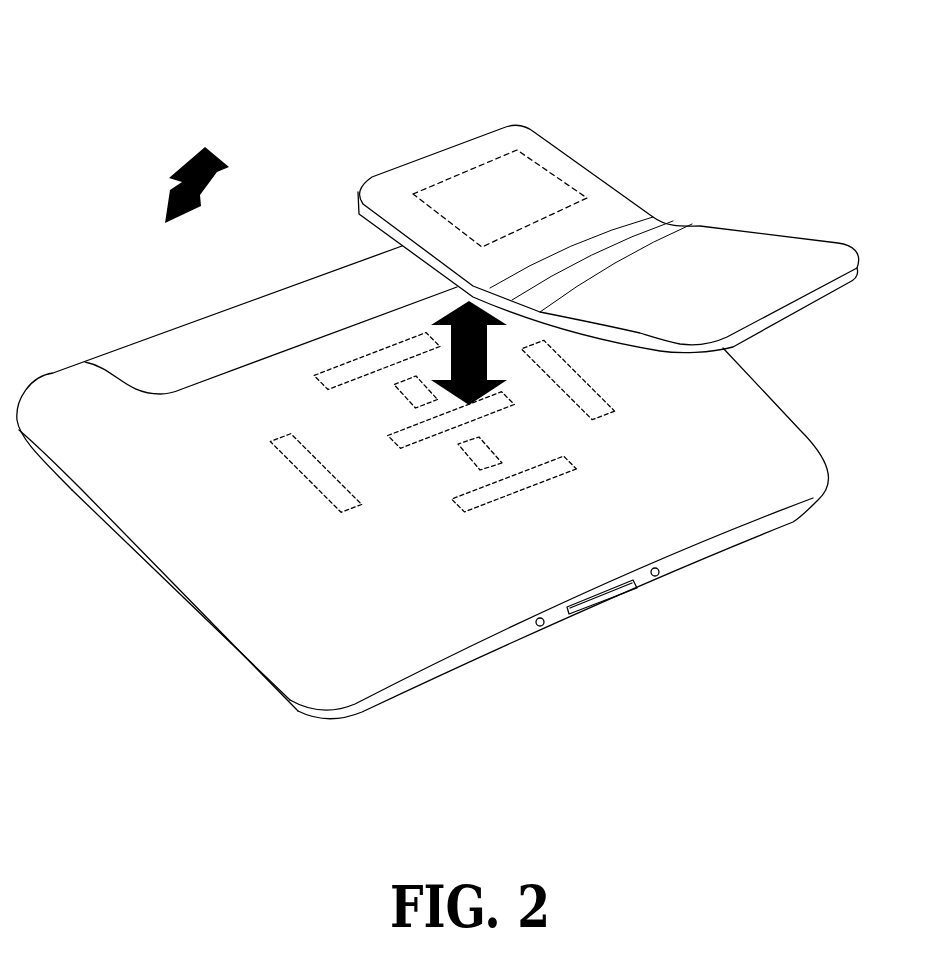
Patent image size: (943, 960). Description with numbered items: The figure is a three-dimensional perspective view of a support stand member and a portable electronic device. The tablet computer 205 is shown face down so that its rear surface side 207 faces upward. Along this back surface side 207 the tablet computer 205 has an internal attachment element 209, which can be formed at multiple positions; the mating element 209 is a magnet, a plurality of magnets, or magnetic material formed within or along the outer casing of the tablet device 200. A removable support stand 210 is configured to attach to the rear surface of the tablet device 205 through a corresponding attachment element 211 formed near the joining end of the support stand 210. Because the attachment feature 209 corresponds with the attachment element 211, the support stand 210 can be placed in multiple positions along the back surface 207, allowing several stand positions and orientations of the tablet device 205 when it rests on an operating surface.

The tablet device 200 is at (122, 42).
The tablet computer 205 is at (61, 381).
The rear surface side 207 is at (220, 586).
The internal attachment element 209 is at (420, 423).
The removable support stand 210 is at (443, 158).
The attachment element 211 is at (557, 178).